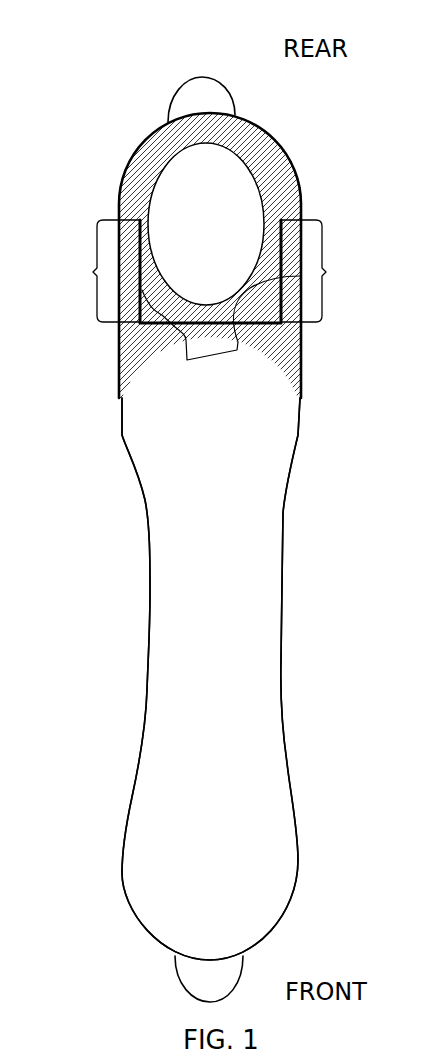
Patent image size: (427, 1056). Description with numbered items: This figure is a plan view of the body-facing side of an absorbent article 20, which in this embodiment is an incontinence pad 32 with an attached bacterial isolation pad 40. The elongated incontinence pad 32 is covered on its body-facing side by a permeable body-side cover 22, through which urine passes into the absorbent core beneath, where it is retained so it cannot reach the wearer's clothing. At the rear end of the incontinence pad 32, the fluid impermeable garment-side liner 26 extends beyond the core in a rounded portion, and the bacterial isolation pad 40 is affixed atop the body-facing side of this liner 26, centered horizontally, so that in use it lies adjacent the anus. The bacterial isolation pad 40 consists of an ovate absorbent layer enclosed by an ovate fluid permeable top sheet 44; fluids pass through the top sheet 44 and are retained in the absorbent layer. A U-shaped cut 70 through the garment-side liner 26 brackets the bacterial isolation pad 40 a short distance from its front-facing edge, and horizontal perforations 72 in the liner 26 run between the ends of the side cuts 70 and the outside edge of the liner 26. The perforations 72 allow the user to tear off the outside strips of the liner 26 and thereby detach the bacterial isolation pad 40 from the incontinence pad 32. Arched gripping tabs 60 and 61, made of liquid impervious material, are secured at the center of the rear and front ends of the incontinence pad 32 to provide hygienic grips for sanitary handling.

The absorbent article 20 is at (346, 176).
The permeable body-side cover 22 is at (177, 652).
The garment-side liner 26 is at (148, 141).
The incontinence pad 32 is at (221, 729).
The bacterial isolation pad 40 is at (83, 119).
The fluid permeable top sheet 44 is at (182, 170).
The gripping tab 60 is at (188, 91).
The gripping tab 61 is at (177, 963).
The U-shaped cut 70 is at (185, 361).
The horizontal perforations 72 is at (93, 272).